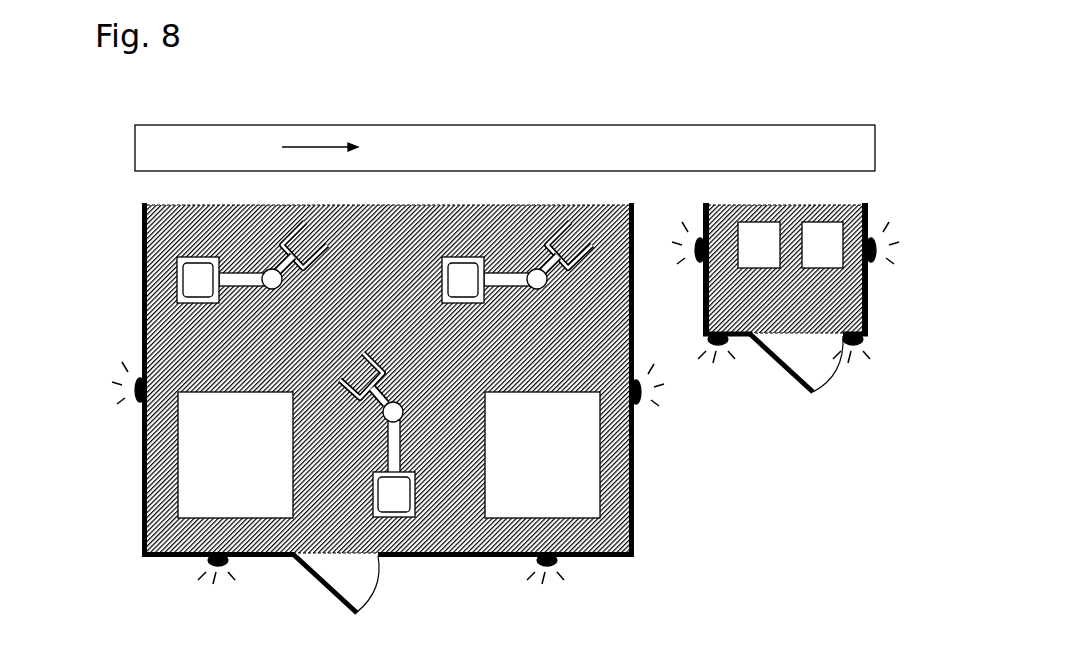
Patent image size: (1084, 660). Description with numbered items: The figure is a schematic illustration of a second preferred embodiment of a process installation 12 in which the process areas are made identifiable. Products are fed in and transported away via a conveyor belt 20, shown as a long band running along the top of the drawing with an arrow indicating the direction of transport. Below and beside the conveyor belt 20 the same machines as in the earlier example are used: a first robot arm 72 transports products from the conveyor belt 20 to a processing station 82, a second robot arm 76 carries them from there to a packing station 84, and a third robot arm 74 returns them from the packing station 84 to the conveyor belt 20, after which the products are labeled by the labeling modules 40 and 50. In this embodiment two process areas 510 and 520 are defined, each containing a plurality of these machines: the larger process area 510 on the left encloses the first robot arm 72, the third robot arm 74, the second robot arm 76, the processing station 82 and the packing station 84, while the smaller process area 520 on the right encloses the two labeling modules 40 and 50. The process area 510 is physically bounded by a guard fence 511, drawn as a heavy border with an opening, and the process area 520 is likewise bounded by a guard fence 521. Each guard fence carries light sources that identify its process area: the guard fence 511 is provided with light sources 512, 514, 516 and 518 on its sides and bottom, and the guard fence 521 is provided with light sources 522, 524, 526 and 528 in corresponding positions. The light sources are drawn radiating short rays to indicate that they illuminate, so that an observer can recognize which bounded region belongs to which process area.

The process installation 12 is at (438, 82).
The conveyor belt 20 is at (557, 125).
The labeling module 40 is at (758, 222).
The labeling module 50 is at (812, 222).
The first robot arm 72 is at (177, 262).
The third robot arm 74 is at (462, 257).
The second robot arm 76 is at (415, 517).
The processing station 82 is at (178, 450).
The packing station 84 is at (603, 440).
The process area 510 is at (166, 205).
The guard fence 511 is at (634, 510).
The light source 512 is at (133, 400).
The light source 514 is at (228, 566).
The light source 516 is at (558, 566).
The light source 518 is at (648, 400).
The process area 520 is at (843, 204).
The guard fence 521 is at (703, 285).
The light source 522 is at (692, 240).
The light source 524 is at (728, 345).
The light source 526 is at (866, 345).
The light source 528 is at (878, 262).